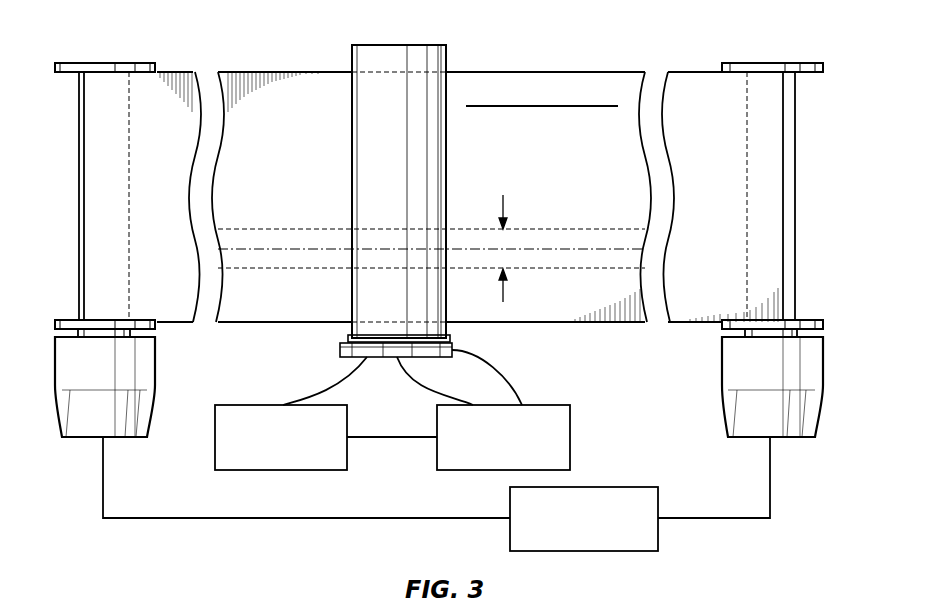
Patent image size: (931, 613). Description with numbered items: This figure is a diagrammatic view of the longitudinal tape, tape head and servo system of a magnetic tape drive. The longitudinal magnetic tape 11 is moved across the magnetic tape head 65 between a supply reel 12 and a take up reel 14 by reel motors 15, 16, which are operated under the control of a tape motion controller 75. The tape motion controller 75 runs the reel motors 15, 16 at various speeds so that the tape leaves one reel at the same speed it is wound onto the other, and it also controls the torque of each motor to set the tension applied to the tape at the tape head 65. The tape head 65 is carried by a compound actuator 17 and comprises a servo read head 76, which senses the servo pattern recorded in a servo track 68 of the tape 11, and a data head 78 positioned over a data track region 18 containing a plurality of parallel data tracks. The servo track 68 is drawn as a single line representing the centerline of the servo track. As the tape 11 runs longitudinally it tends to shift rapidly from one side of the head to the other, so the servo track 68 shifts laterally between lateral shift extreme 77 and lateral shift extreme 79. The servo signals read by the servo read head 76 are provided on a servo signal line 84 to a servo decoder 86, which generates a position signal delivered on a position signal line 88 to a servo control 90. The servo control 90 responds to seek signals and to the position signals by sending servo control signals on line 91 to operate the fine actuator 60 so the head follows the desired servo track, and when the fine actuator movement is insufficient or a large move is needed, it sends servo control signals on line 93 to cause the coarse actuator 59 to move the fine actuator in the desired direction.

The magnetic tape 11 is at (268, 72).
The supply reel 12 is at (88, 63).
The take up reel 14 is at (762, 63).
The reel motor 15 is at (88, 440).
The reel motor 16 is at (787, 440).
The compound actuator 17 is at (381, 375).
The data track region 18 is at (540, 107).
The coarse actuator motor 59 is at (455, 352).
The fine actuator 60 is at (455, 341).
The magnetic tape head 65 is at (350, 332).
The servo track 68 is at (592, 249).
The tape motion controller 75 is at (658, 533).
The servo read head 76 is at (397, 257).
The lateral shift extreme 77 is at (505, 206).
The data head 78 is at (397, 108).
The lateral shift extreme 79 is at (505, 290).
The servo signal line 84 is at (308, 383).
The servo decoder 86 is at (215, 438).
The position signal line 88 is at (392, 438).
The servo control 90 is at (570, 438).
The servo control signal line 91 is at (421, 391).
The servo control signal line 93 is at (520, 405).